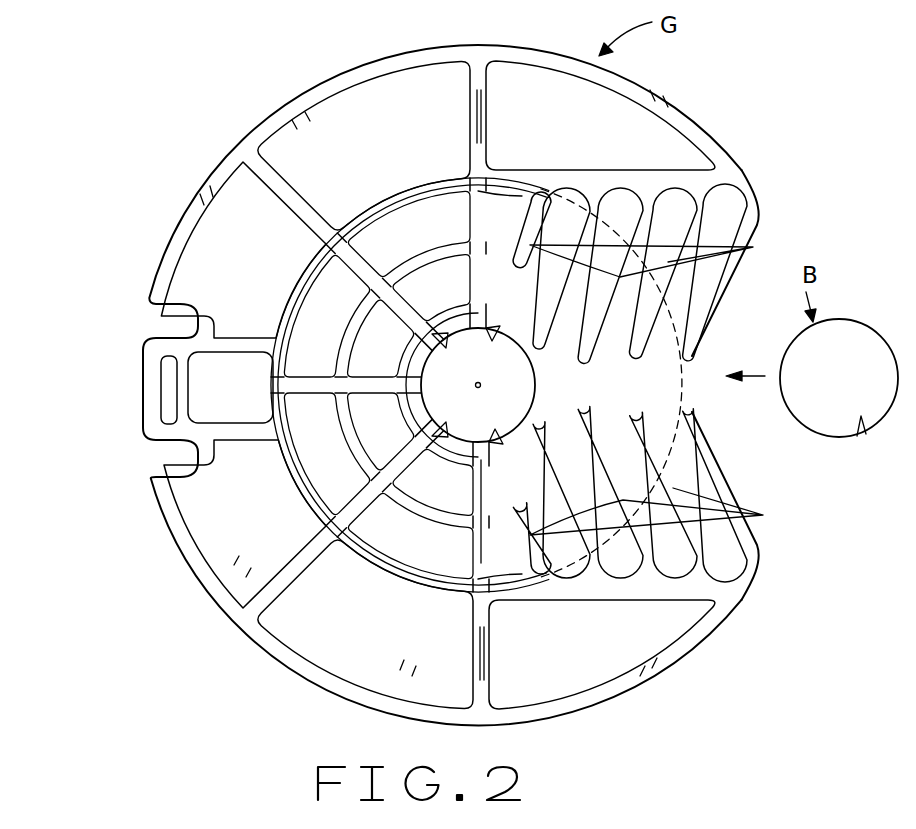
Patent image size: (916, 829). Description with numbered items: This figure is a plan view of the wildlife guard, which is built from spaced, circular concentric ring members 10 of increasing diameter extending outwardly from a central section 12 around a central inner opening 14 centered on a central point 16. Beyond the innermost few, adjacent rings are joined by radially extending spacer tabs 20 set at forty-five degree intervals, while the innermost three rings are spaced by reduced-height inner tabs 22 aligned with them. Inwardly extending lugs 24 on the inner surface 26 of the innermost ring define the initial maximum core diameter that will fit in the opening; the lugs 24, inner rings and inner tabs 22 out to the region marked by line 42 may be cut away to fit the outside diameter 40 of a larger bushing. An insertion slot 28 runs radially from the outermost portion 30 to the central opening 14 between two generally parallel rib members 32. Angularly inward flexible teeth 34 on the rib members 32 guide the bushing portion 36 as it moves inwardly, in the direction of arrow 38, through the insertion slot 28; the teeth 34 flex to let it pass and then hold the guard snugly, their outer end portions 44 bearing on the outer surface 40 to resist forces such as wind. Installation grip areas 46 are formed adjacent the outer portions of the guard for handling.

The ring members 10 is at (360, 78).
The central section 12 is at (522, 449).
The central inner opening 14 is at (507, 419).
The central point 16 is at (484, 381).
The spacer tabs 20 is at (470, 130).
The inner tabs 22 is at (470, 226).
The lugs 24 is at (450, 330).
The inner surface 26 is at (537, 382).
The insertion slot 28 is at (678, 383).
The outermost portion 30 is at (753, 333).
The rib members 32 is at (623, 178).
The teeth 34 is at (664, 387).
The bushing portion 36 is at (862, 320).
The arrow 38 is at (751, 361).
The outside diameter 40 is at (864, 426).
The line 42 is at (673, 440).
The outer end portions 44 is at (585, 350).
The installation grip areas 46 is at (128, 383).